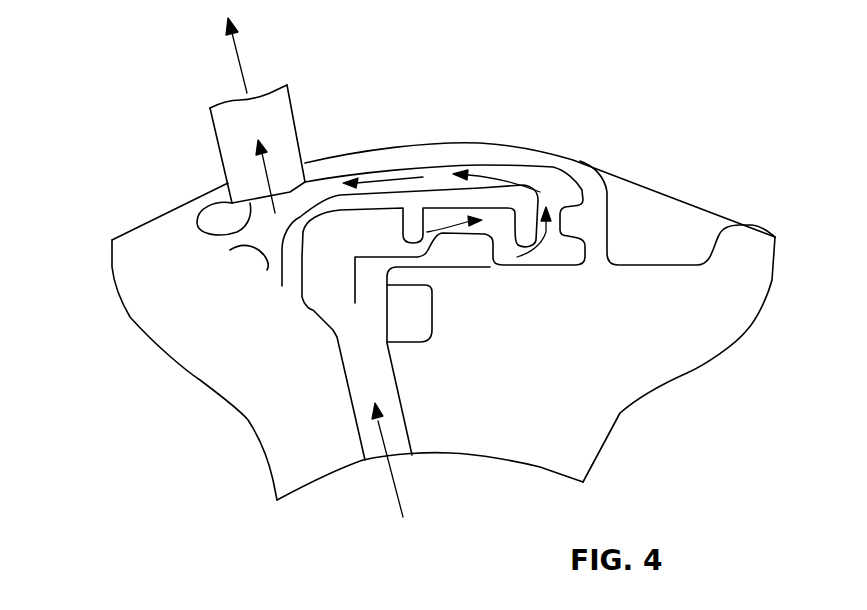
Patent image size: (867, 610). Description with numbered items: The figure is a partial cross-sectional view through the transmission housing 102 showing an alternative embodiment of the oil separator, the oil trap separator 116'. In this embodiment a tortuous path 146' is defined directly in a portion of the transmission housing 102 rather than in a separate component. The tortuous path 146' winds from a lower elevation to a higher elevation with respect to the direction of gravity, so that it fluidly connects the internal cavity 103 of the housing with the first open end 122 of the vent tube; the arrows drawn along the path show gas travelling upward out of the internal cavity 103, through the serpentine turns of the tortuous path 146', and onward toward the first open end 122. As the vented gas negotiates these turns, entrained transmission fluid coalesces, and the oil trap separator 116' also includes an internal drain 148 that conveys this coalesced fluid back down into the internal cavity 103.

The transmission housing 102 is at (700, 203).
The oil trap separator 116' is at (458, 246).
The tortuous path 146' is at (408, 269).
The first open end 122 is at (282, 286).
The internal drain 148 is at (230, 250).
The internal cavity 103 is at (280, 113).